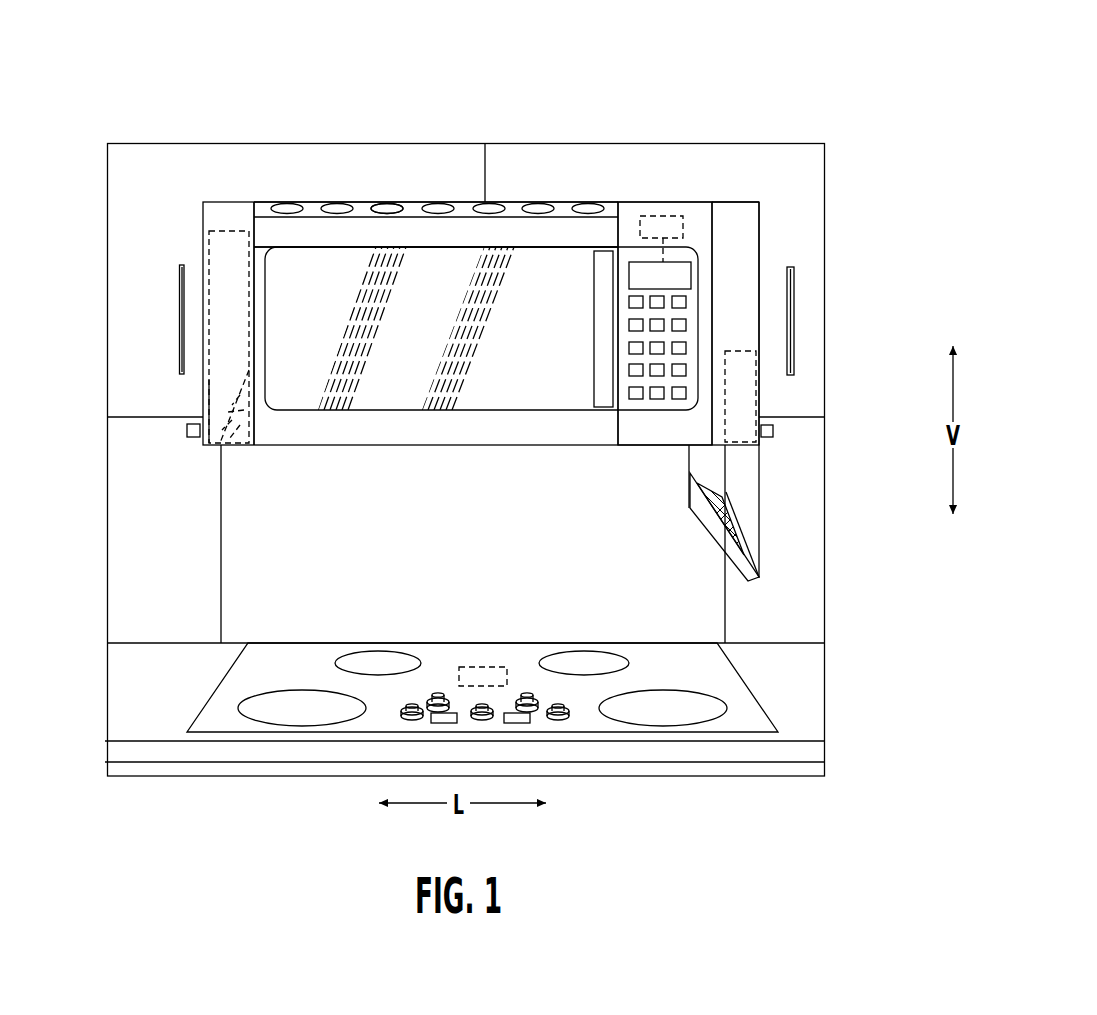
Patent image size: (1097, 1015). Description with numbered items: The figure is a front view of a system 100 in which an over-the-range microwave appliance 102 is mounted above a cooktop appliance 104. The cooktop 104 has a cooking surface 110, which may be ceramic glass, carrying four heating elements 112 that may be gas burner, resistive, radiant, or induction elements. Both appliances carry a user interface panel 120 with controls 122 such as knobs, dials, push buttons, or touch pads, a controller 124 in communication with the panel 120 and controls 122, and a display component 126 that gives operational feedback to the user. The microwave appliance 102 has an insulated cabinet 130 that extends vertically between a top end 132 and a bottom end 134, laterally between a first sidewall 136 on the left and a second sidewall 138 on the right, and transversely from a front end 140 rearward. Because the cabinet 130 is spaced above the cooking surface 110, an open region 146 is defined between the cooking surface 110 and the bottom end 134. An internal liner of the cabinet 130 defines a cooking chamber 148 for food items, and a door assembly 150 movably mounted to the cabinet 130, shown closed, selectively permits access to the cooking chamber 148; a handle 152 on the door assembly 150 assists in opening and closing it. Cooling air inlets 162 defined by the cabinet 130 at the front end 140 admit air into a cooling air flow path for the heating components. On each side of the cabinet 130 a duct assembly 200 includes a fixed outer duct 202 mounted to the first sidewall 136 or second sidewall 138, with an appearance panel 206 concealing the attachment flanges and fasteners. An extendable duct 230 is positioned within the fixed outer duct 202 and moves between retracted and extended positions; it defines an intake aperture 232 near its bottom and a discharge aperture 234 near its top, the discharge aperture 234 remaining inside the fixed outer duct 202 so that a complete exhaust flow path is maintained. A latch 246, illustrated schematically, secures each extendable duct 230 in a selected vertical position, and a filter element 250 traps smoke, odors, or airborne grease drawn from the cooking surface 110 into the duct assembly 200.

The system 100 is at (88, 106).
The over-the-range microwave appliance 102 is at (743, 189).
The cooktop appliance 104 is at (201, 675).
The cooking surface 110 is at (715, 657).
The heating element 112 is at (313, 702).
The user interface panel 120 is at (642, 411).
The control 122 is at (690, 302).
The controller 124 is at (667, 215).
The display component 126 is at (686, 258).
The cabinet 130 is at (560, 202).
The top end 132 is at (415, 198).
The bottom end 134 is at (444, 453).
The first sidewall 136 is at (251, 251).
The second sidewall 138 is at (717, 228).
The front end 140 is at (440, 226).
The open region 146 is at (486, 545).
The cooking chamber 148 is at (508, 306).
The door assembly 150 is at (330, 208).
The handle 152 is at (605, 255).
The cooling air inlet 162 is at (390, 208).
The duct assembly 200 is at (199, 307).
The fixed outer duct 202 is at (205, 270).
The appearance panel 206 is at (240, 202).
The extendable duct 230 is at (208, 380).
The intake aperture 232 is at (709, 524).
The discharge aperture 234 is at (222, 227).
The latch 246 is at (187, 431).
The filter element 250 is at (692, 497).